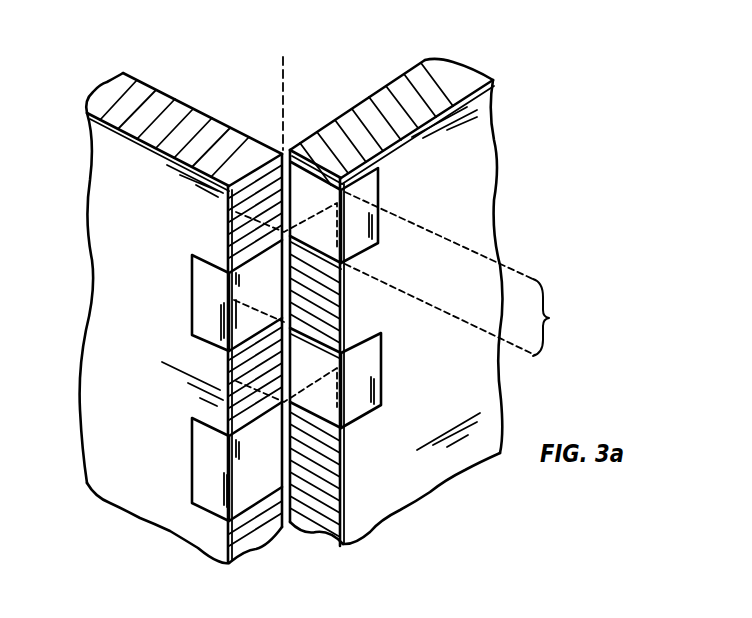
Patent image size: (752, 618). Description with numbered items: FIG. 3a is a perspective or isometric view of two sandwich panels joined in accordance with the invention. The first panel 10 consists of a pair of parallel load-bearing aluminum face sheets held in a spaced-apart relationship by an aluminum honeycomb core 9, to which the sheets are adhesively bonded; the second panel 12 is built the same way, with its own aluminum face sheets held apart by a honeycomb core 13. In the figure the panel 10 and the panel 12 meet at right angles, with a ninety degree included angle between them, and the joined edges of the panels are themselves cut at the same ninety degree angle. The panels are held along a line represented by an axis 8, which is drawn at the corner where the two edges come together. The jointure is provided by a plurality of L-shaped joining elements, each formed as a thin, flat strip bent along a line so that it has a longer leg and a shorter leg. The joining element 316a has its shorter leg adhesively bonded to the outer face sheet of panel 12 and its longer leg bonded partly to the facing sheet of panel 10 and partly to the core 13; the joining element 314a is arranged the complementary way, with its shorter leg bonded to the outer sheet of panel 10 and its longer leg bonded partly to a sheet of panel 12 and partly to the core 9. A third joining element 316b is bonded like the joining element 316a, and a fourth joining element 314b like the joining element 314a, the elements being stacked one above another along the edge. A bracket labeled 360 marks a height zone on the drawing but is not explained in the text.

The panel 10 is at (193, 288).
The honeycomb core 9 is at (192, 127).
The axis 8 is at (285, 57).
The honeycomb core 13 is at (368, 115).
The panel 12 is at (417, 274).
The joining element 314a is at (187, 289).
The joining element 314b is at (200, 467).
The joining element 316a is at (426, 184).
The joining element 316b is at (385, 428).
The bracket height zone 360 is at (463, 274).